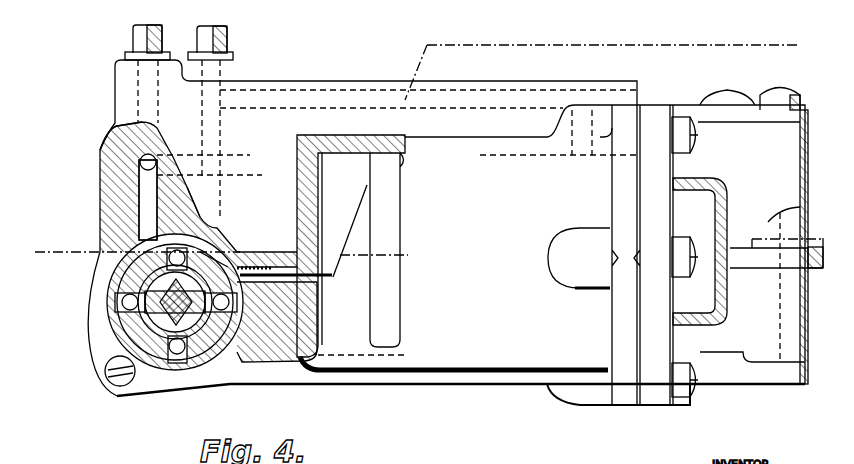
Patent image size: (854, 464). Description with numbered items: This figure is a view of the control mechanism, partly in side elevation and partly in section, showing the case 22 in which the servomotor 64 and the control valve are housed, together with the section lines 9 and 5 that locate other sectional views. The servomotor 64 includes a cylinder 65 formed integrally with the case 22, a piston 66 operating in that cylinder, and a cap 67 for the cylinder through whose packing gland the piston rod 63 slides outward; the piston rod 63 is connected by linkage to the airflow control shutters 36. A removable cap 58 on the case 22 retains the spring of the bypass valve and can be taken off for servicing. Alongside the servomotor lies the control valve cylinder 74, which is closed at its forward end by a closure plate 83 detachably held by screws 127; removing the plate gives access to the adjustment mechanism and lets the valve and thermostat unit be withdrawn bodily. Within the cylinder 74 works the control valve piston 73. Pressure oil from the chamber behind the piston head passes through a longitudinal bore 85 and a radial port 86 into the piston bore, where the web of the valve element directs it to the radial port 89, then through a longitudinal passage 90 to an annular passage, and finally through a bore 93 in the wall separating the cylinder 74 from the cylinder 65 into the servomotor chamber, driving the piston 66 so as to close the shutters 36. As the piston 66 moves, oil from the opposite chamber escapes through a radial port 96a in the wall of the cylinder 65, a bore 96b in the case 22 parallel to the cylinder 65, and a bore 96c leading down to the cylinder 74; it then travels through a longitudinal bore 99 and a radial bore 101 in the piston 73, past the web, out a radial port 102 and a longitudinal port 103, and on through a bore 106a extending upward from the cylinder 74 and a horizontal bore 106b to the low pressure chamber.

The section line 9- 9 is at (40, 250).
The section line 5- 5 is at (68, 250).
The bore 106a is at (137, 166).
The longitudinal bore 99 is at (200, 218).
The radial bore 101 is at (150, 226).
The radial port 86 is at (212, 256).
The longitudinal bore 85 is at (238, 272).
The bore 93 is at (276, 259).
The bore 96b is at (329, 87).
The airflow control shutters 36 is at (377, 88).
The bore 96c is at (222, 126).
The bore 106b is at (233, 160).
The cylinder 65 is at (396, 160).
The piston rod 63 is at (388, 231).
The piston 66 is at (357, 316).
The radial port 96a is at (570, 130).
The cap 58 is at (713, 98).
The cap 67 is at (658, 183).
The servomotor 64 is at (727, 310).
The case 22 is at (495, 384).
The control valve piston 73 is at (147, 367).
The radial port 89 is at (172, 367).
The longitudinal passage 90 is at (180, 355).
The cylinder 74 is at (195, 374).
The closure plate 83 is at (262, 364).
The longitudinal port 103 is at (107, 307).
The radial port 102 is at (113, 328).
The screws 127 is at (106, 378).